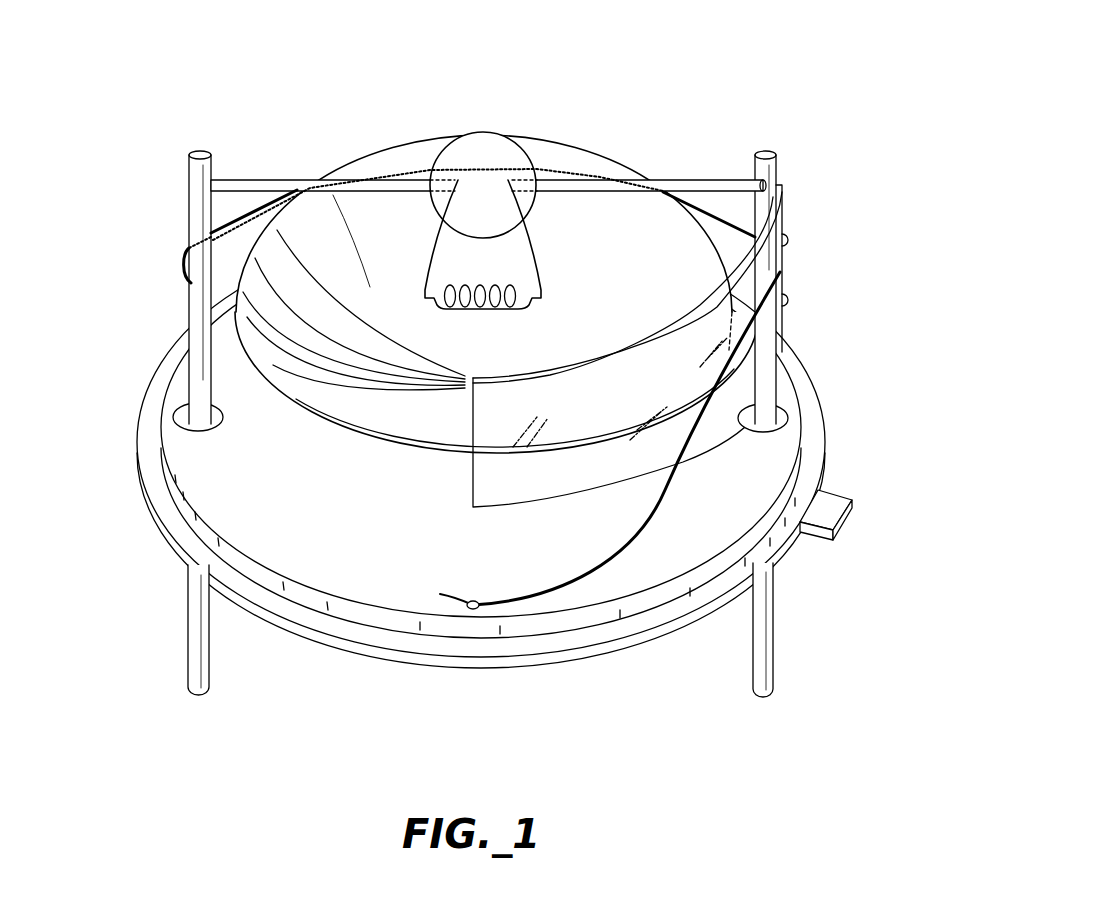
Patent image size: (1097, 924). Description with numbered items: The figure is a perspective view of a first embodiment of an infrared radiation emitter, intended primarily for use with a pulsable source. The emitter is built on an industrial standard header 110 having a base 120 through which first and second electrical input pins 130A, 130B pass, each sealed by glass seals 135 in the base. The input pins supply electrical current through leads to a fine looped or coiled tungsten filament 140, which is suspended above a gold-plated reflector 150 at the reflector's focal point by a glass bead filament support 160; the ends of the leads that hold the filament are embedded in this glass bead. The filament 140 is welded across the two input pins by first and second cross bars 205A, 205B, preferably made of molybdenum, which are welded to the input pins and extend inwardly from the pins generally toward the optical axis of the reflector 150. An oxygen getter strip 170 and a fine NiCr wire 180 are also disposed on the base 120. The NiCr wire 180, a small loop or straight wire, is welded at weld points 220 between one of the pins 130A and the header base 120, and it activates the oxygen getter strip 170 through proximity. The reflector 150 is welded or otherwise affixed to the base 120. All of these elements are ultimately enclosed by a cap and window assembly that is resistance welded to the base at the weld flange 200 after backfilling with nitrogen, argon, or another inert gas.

The header 110 is at (148, 545).
The base 120 is at (812, 449).
The first electrical input pin 130A is at (782, 702).
The second electrical input pin 130B is at (175, 703).
The glass seals 135 is at (160, 420).
The tungsten filament 140 is at (440, 320).
The reflector 150 is at (367, 148).
The glass bead filament support 160 is at (518, 136).
The oxygen getter strip 170 is at (793, 228).
The NiCr wire 180 is at (575, 590).
The weld flange 200 is at (157, 400).
The first cross bar 205A is at (278, 175).
The second cross bar 205B is at (668, 177).
The weld points 220 is at (472, 615).